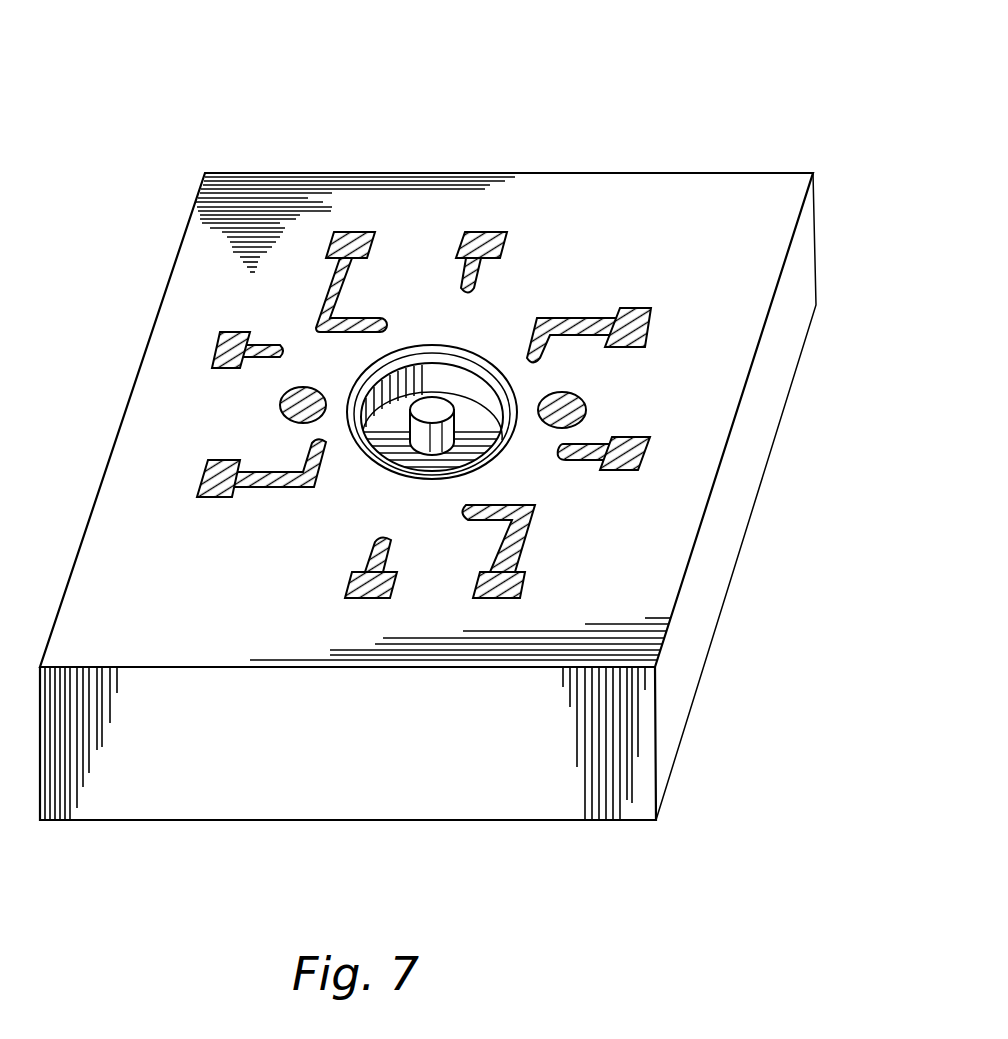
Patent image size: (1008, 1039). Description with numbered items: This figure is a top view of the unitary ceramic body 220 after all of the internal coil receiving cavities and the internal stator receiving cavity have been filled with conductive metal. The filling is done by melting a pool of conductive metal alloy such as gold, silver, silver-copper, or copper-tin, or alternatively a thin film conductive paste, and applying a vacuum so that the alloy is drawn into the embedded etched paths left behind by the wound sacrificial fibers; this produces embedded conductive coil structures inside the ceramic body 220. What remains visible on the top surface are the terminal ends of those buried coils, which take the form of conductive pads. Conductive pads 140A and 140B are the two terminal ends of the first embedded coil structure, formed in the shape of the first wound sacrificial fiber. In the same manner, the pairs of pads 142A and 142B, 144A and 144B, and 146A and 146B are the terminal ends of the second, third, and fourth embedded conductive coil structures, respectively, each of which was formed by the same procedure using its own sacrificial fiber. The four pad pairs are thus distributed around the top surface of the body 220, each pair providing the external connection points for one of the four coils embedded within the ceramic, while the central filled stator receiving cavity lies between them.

The unitary ceramic body 220 is at (620, 88).
The conductive pad 140A is at (352, 585).
The conductive pad 140B is at (515, 560).
The terminal end 142A is at (618, 470).
The terminal end 142B is at (650, 312).
The terminal end 144A is at (497, 240).
The terminal end 144B is at (353, 245).
The terminal end 146A is at (218, 348).
The terminal end 146B is at (213, 492).